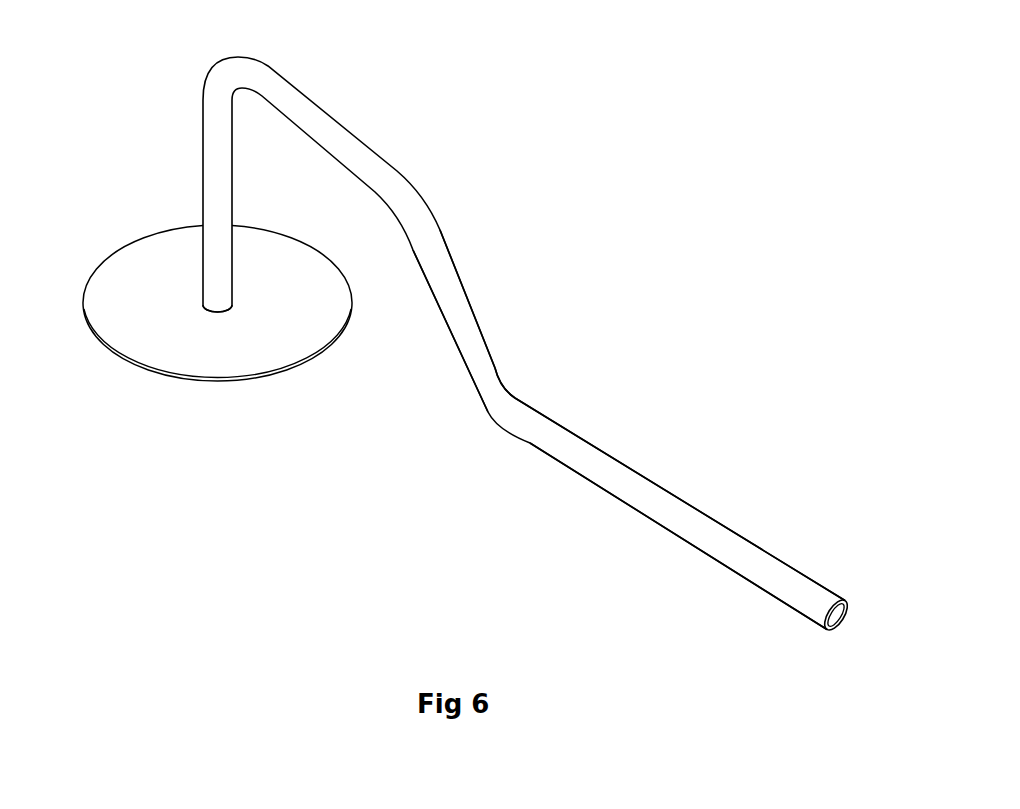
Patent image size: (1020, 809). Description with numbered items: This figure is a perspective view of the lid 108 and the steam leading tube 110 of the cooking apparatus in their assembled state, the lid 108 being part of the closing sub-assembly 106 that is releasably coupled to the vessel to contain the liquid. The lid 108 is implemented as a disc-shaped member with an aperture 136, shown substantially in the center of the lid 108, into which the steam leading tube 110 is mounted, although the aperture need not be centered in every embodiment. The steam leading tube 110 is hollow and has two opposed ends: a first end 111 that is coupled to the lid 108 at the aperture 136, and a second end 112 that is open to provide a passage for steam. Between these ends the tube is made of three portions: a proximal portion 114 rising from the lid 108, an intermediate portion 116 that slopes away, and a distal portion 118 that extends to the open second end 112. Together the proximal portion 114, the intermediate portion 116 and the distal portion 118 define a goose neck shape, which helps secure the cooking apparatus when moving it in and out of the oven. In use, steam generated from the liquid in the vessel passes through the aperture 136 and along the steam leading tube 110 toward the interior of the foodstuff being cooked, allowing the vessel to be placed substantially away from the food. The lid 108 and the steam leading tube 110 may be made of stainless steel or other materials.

The closing sub-assembly 106 is at (731, 133).
The lid 108 is at (198, 342).
The steam leading tube 110 is at (502, 371).
The first end 111 is at (225, 313).
The second end 112 is at (837, 615).
The proximal portion 114 is at (217, 180).
The intermediate portion 116 is at (455, 322).
The distal portion 118 is at (648, 505).
The aperture 136 is at (215, 311).